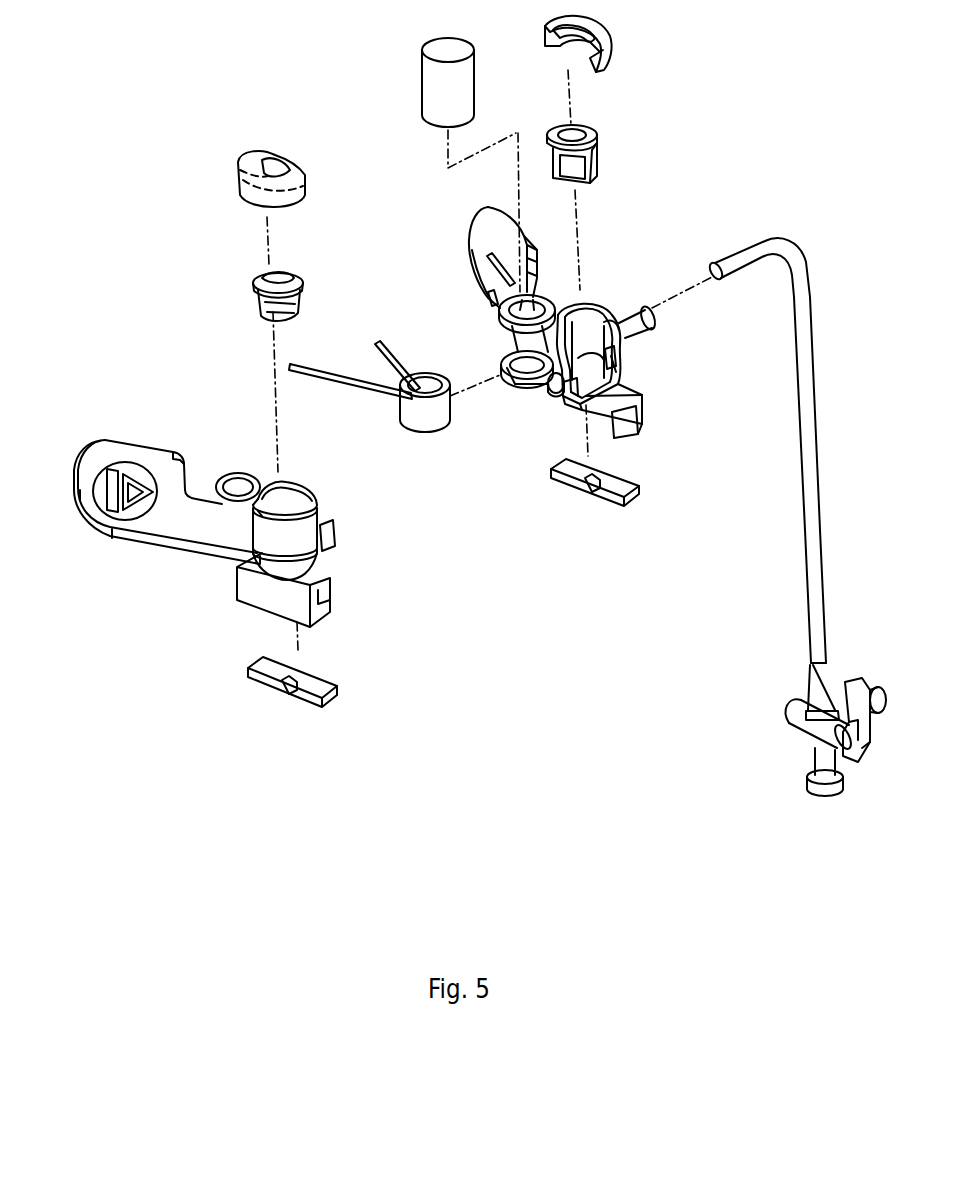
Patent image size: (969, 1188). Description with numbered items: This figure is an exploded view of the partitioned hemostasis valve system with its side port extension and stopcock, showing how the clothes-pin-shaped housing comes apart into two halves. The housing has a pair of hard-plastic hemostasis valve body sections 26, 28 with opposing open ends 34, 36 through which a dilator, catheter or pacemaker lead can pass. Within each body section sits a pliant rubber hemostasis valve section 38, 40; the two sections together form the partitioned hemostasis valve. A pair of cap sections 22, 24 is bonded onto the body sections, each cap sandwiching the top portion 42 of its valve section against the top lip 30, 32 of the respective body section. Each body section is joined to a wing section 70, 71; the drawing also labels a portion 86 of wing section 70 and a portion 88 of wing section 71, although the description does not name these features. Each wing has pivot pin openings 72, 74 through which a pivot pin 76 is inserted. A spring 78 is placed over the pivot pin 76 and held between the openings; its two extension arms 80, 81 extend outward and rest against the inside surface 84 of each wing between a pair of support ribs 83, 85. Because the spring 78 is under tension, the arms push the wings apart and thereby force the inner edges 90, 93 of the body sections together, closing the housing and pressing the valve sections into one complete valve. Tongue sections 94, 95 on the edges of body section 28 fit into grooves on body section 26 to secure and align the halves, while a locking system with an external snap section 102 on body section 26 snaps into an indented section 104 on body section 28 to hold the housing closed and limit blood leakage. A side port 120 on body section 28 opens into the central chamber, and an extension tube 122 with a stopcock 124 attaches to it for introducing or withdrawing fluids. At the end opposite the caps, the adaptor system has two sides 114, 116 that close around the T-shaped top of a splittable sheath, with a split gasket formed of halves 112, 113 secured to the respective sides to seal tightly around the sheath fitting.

The cap section 22 is at (238, 192).
The cap section 24 is at (600, 38).
The hemostasis valve body section 26 is at (270, 543).
The hemostasis valve body section 28 is at (630, 393).
The top lip 30 is at (293, 497).
The top lip 32 is at (598, 307).
The first open end 34 is at (583, 325).
The second open end 36 is at (587, 390).
The hemostasis valve section 38 is at (265, 303).
The hemostasis valve section 40 is at (597, 163).
The top portion 42 is at (593, 133).
The wing section 70 is at (90, 460).
The wing section 71 is at (493, 210).
The pivot pin opening 72 is at (533, 307).
The pivot pin opening 74 is at (530, 362).
The pivot pin 76 is at (440, 90).
The spring 78 is at (433, 420).
The extension arm 80 is at (303, 365).
The extension arm 81 is at (383, 343).
The support rib 83 is at (497, 270).
The inside surface 84 is at (480, 238).
The support rib 85 is at (492, 300).
The bracket edge 86 is at (110, 527).
The arm flange 88 is at (527, 234).
The inner edge 90 is at (630, 410).
The inner edge 93 is at (557, 380).
The tongue section 94 is at (618, 377).
The tongue section 95 is at (507, 370).
The external snap section 102 is at (332, 537).
The indented section 104 is at (617, 360).
The split gasket half 112 is at (320, 693).
The split gasket half 113 is at (627, 487).
The adaptor system side 114 is at (323, 603).
The adaptor system side 116 is at (640, 427).
The side port 120 is at (634, 327).
The extension tube 122 is at (810, 410).
The stopcock 124 is at (815, 738).